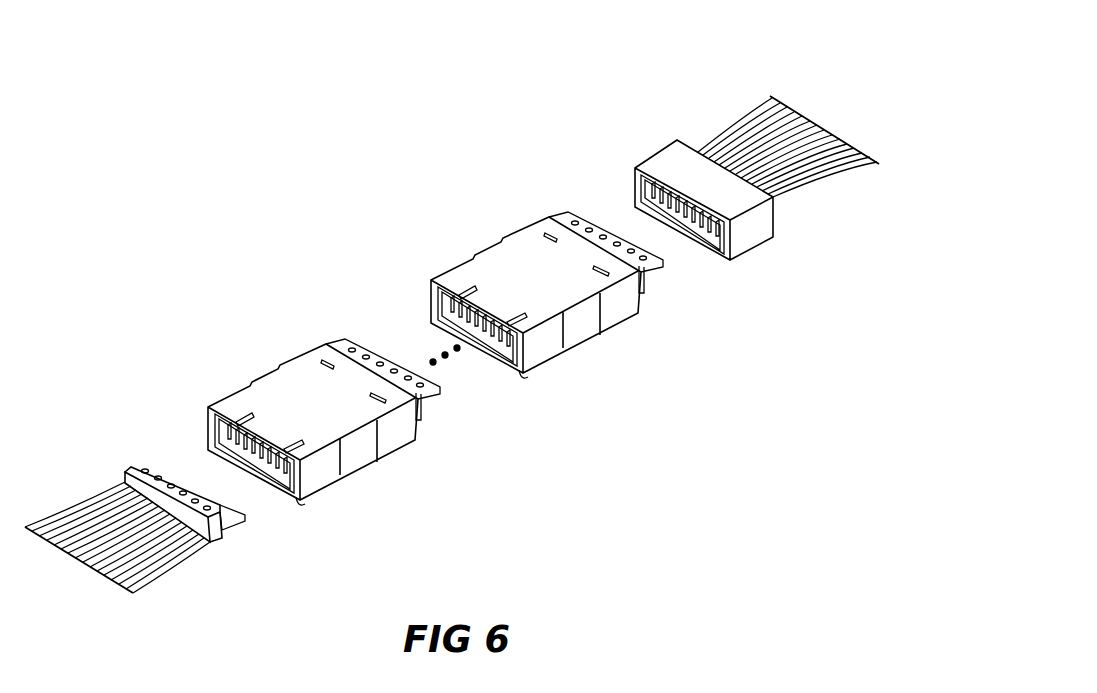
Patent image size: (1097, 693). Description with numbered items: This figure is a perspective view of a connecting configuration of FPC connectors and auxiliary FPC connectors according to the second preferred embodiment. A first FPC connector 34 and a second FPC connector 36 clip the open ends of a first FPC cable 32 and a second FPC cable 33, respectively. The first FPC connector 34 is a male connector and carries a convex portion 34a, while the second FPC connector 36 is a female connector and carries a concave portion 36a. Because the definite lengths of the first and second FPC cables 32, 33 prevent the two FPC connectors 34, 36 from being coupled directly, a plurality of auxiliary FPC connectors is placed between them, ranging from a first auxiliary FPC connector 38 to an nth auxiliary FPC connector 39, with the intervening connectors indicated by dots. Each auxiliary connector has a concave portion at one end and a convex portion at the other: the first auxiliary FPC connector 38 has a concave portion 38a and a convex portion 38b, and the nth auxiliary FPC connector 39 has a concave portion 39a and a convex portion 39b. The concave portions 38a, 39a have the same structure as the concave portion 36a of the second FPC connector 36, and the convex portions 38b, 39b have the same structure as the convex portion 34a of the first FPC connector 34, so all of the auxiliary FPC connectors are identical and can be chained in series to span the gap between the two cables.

The first FPC cable 32 is at (97, 503).
The second FPC cable 33 is at (753, 140).
The first FPC connector 34 is at (133, 458).
The convex portion 34a is at (240, 521).
The second FPC connector 36 is at (656, 141).
The concave portion 36a is at (713, 240).
The first auxiliary FPC connector 38 is at (216, 363).
The concave portion 38a is at (367, 342).
The convex portion 38b is at (304, 504).
The nth auxiliary FPC connector 39 is at (504, 214).
The concave portion 39a is at (592, 215).
The convex portion 39b is at (527, 377).